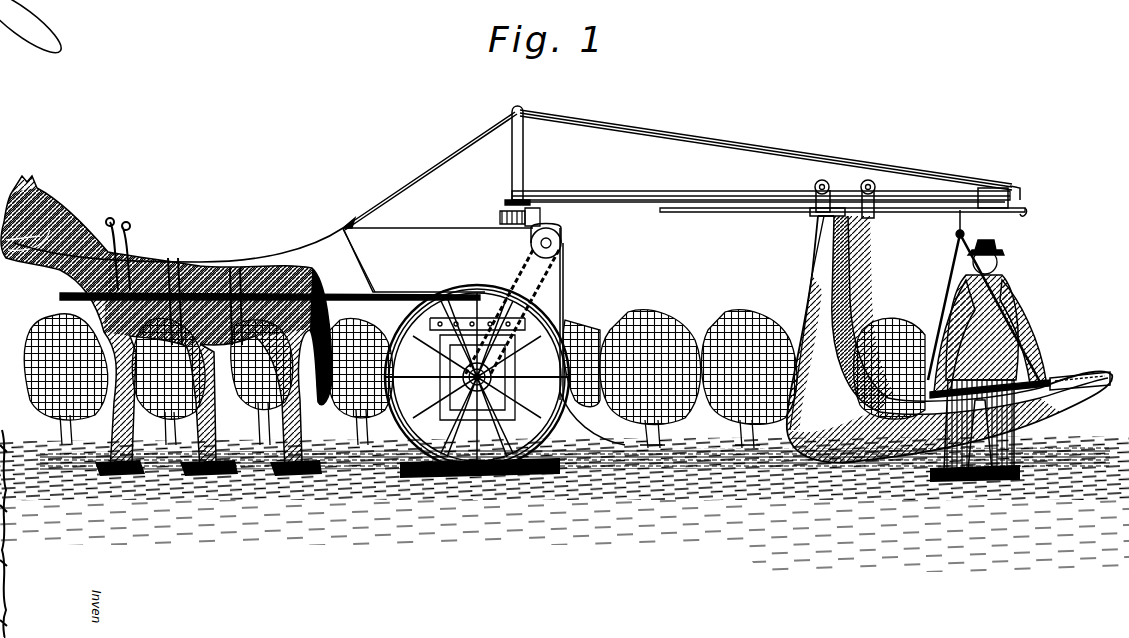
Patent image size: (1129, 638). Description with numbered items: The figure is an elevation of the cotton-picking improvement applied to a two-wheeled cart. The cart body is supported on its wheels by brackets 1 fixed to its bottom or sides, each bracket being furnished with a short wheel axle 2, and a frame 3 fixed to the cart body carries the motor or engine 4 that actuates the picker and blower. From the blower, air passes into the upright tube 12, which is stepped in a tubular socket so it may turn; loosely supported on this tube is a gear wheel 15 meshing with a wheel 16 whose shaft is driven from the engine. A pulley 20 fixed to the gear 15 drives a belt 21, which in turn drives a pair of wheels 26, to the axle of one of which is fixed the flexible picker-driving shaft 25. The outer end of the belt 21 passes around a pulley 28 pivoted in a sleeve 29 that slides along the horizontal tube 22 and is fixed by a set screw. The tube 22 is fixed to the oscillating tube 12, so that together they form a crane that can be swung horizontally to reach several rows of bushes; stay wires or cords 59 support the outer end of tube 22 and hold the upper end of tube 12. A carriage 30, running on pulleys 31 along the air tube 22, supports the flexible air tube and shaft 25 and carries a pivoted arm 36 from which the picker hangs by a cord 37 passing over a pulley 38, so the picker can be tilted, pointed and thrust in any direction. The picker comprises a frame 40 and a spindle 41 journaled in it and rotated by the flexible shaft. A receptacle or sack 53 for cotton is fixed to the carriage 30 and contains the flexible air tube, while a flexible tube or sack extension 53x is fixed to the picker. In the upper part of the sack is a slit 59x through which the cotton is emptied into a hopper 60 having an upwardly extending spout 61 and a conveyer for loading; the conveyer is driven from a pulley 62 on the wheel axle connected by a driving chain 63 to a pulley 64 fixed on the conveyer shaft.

The bracket 1 is at (468, 312).
The wheel axle 2 is at (400, 408).
The frame 3 is at (476, 314).
The motor or engine 4 is at (472, 400).
The tube 12 is at (522, 165).
The gear wheel 15 is at (540, 214).
The wheel 16 is at (505, 212).
The pulley 20 is at (530, 197).
The belt 21 is at (608, 196).
The tube 22 is at (740, 194).
The flexible picker-driving shaft 25 is at (846, 262).
The wheels 26 is at (835, 214).
The pulley 28 is at (1012, 210).
The sleeve 29 is at (990, 190).
The carriage 30 is at (845, 197).
The pulleys 31 is at (868, 180).
The pivoted arm 36 is at (1022, 218).
The cord 37 is at (942, 282).
The pulley 38 is at (962, 236).
The picker frame 40 is at (1100, 376).
The spindle 41 is at (1028, 378).
The receptacle or sack 53 is at (815, 268).
The flexible tube or sack extension 53x is at (1092, 395).
The stay wires or cords 59 is at (677, 170).
The slit 59x is at (808, 310).
The hopper 60 is at (592, 418).
The spout 61 is at (564, 297).
The pulley 62 is at (452, 330).
The driving chain 63 is at (565, 268).
The pulley 64 is at (568, 244).